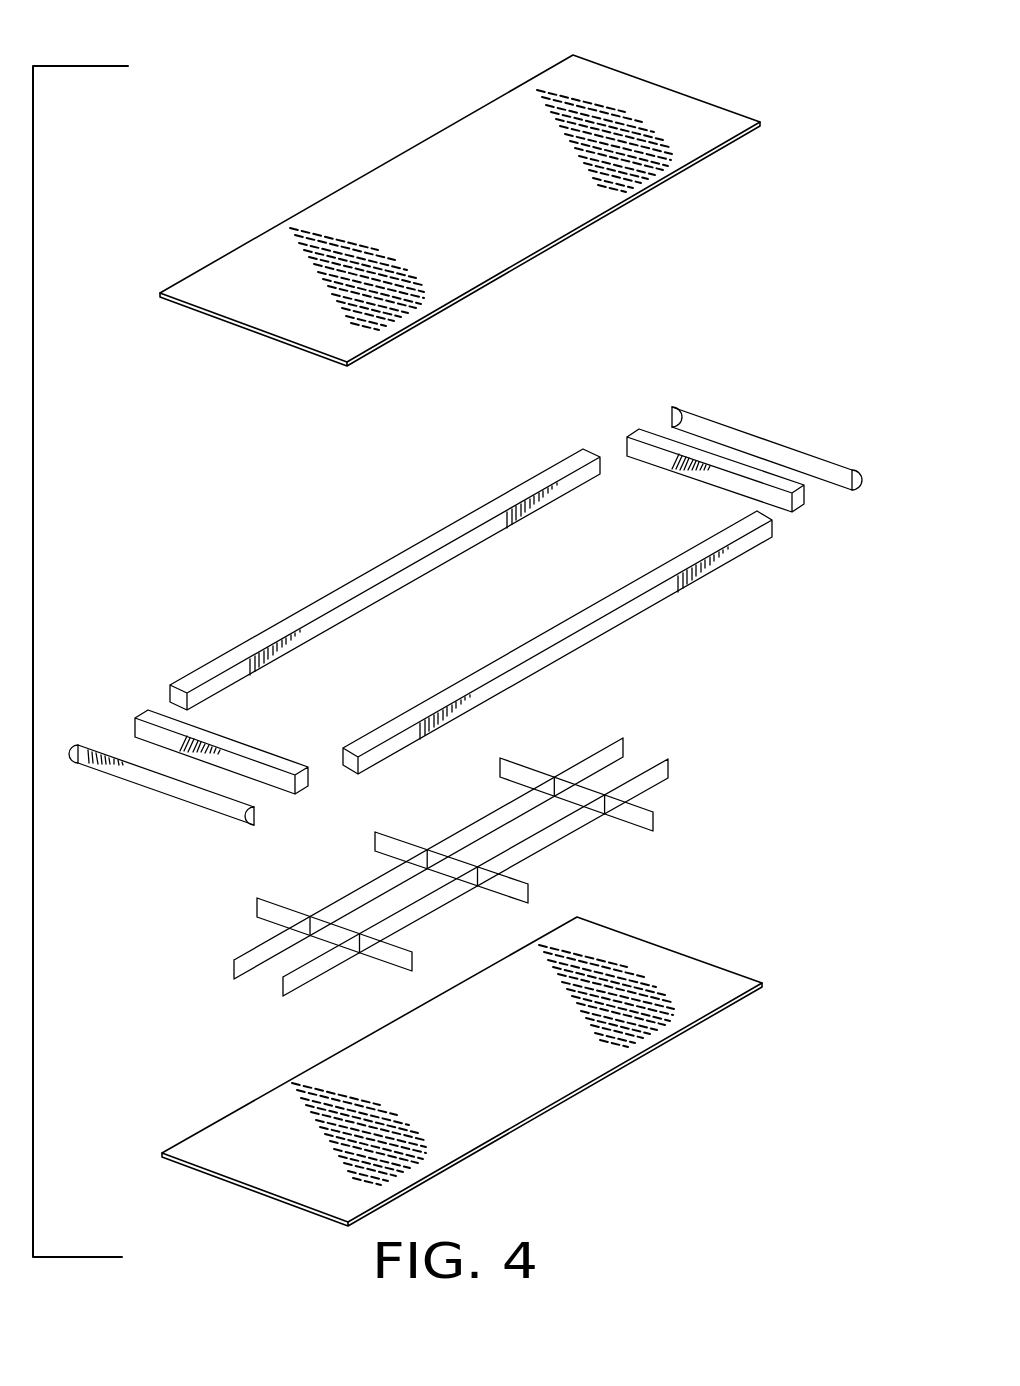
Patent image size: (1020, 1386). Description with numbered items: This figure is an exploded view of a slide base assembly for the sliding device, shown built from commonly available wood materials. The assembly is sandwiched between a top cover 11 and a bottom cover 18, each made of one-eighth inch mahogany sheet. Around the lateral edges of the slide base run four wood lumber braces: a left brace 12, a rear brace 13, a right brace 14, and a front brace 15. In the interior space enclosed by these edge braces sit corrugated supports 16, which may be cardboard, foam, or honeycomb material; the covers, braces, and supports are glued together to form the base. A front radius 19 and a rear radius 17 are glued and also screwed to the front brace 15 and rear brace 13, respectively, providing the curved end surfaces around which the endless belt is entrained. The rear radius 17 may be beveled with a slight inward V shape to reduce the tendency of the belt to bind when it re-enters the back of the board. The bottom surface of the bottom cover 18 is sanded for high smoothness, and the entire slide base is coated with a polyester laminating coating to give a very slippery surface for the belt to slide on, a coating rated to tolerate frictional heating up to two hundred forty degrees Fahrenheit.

The top cover 11 is at (505, 110).
The left brace 12 is at (565, 467).
The rear brace 13 is at (783, 497).
The right brace 14 is at (537, 660).
The front brace 15 is at (148, 732).
The corrugated supports 16 is at (700, 810).
The rear radius 17 is at (783, 293).
The bottom cover 18 is at (485, 1137).
The front radius 19 is at (148, 783).